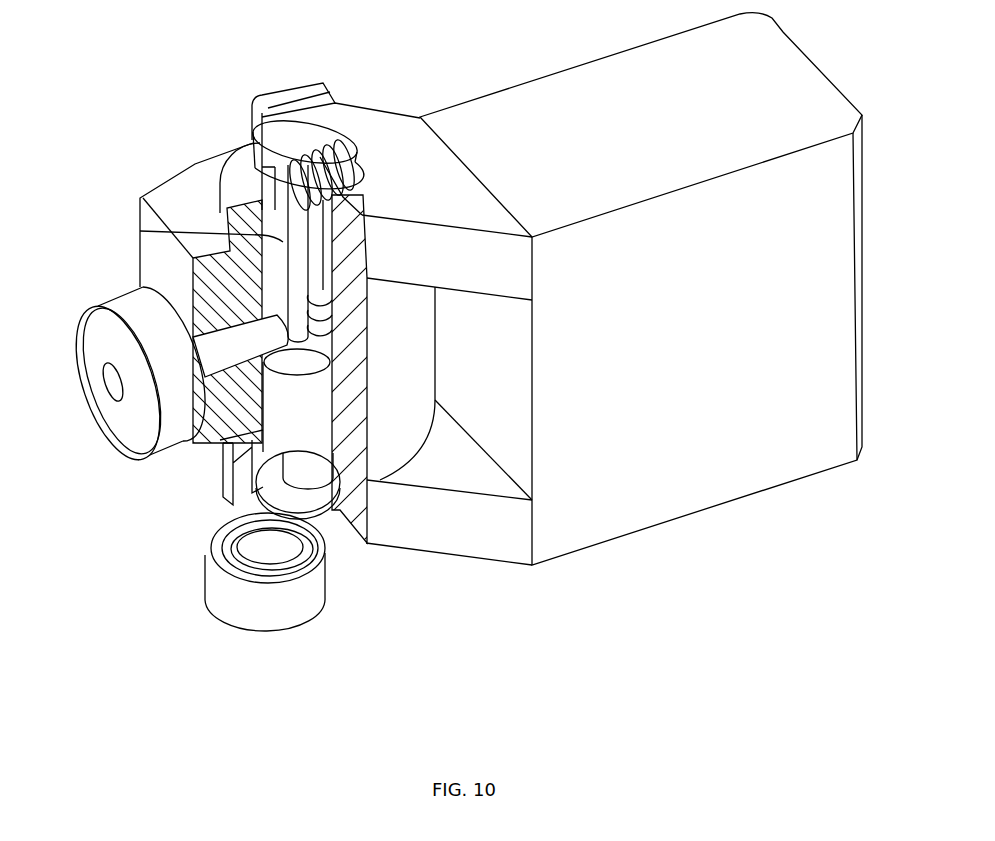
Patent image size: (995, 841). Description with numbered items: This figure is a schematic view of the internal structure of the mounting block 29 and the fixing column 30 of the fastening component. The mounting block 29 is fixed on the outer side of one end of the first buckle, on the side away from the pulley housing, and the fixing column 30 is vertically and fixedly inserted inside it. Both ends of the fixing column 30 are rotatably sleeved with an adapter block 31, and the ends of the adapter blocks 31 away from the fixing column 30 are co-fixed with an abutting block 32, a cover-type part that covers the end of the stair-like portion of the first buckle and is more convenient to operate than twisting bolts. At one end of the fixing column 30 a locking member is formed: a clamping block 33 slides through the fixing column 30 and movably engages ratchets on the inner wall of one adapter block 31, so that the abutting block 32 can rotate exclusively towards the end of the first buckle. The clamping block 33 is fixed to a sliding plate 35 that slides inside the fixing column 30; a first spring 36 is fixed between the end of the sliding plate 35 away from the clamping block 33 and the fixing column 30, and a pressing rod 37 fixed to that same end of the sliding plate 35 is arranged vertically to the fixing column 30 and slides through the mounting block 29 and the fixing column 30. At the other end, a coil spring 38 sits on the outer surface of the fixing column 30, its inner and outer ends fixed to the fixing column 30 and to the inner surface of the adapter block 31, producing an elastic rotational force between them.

The mounting block 29 is at (396, 460).
The fixing column 30 is at (290, 427).
The adapter block 31 is at (505, 530).
The abutting block 32 is at (642, 487).
The clamping block 33 is at (262, 177).
The sliding plate 35 is at (170, 232).
The first spring 36 is at (318, 155).
The pressing rod 37 is at (172, 370).
The coil spring 38 is at (278, 607).